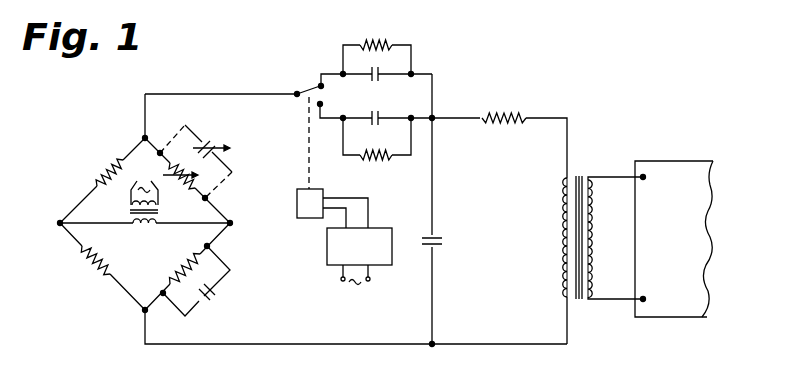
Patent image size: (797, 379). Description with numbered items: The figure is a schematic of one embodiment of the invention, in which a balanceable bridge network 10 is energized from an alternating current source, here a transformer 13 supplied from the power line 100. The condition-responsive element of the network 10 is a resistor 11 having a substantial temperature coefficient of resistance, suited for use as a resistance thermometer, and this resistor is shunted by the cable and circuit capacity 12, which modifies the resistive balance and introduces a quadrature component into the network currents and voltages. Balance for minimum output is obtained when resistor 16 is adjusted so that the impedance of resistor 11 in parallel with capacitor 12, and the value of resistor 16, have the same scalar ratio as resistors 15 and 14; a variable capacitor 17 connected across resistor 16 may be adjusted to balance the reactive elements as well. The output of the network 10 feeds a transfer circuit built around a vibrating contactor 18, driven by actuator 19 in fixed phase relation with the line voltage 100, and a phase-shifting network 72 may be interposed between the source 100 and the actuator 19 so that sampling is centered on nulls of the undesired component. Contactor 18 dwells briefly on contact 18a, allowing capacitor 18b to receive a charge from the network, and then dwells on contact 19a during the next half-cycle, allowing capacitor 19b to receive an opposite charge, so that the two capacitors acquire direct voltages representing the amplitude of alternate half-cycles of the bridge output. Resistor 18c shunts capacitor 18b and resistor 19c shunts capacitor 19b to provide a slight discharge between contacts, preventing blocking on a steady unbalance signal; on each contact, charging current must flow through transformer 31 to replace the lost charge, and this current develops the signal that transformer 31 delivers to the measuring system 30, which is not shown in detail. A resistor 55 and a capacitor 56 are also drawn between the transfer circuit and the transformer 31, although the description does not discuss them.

The balanceable bridge network 10 is at (40, 213).
The resistor 11 is at (199, 263).
The cable and circuit capacity 12 is at (217, 300).
The transformer 13 is at (141, 228).
The resistor 14 is at (105, 178).
The resistor 15 is at (108, 277).
The resistor 16 is at (180, 190).
The variable capacitor 17 is at (210, 140).
The vibrating contactor 18 is at (299, 91).
The contact 18a is at (318, 83).
The capacitor 18b is at (371, 78).
The resistor 18c is at (384, 43).
The actuator 19 is at (297, 203).
The contact 19a is at (313, 108).
The capacitor 19b is at (383, 112).
The resistor 19c is at (373, 158).
The measuring system 30 is at (690, 244).
The transformer 31 is at (575, 175).
The resistor 55 is at (511, 113).
The capacitor 56 is at (446, 242).
The phase-shifting network 72 is at (327, 258).
The power line 100 is at (363, 299).